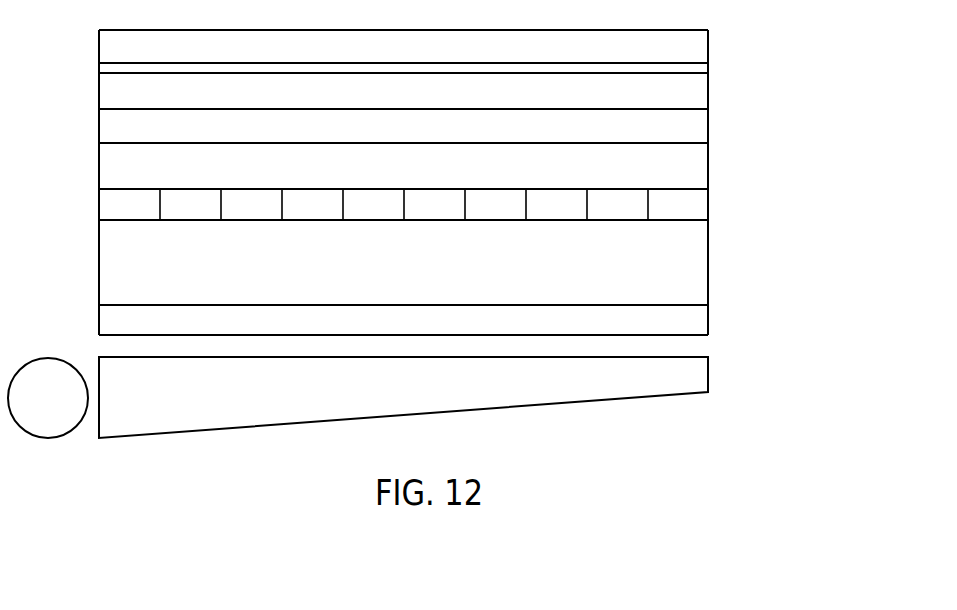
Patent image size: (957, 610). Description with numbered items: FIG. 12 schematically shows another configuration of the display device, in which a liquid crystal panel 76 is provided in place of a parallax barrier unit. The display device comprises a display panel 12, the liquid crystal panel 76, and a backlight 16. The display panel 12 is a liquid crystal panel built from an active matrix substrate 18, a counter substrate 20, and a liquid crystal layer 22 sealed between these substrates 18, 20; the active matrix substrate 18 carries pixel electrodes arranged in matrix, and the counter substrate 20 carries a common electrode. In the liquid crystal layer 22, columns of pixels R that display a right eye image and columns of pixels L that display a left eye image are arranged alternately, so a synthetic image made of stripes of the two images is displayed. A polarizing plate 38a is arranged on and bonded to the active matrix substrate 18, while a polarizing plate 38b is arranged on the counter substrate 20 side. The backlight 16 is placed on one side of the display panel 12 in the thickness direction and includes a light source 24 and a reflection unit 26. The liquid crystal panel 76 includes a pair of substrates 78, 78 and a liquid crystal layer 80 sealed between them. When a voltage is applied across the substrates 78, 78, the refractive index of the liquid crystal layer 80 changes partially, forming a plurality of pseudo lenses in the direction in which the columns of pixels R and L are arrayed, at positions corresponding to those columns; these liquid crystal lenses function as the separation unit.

The display panel 12 is at (448, 202).
The backlight 16 is at (358, 433).
The active matrix substrate 18 is at (722, 238).
The counter substrate 20 is at (690, 171).
The liquid crystal layer 22 is at (690, 205).
The light source 24 is at (48, 415).
The reflection unit 26 is at (110, 410).
The polarizing plate 38a is at (686, 318).
The polarizing plate 38b is at (695, 127).
The liquid crystal panel 76 is at (448, 69).
The substrate 78 is at (690, 49).
The liquid crystal layer 80 is at (692, 68).